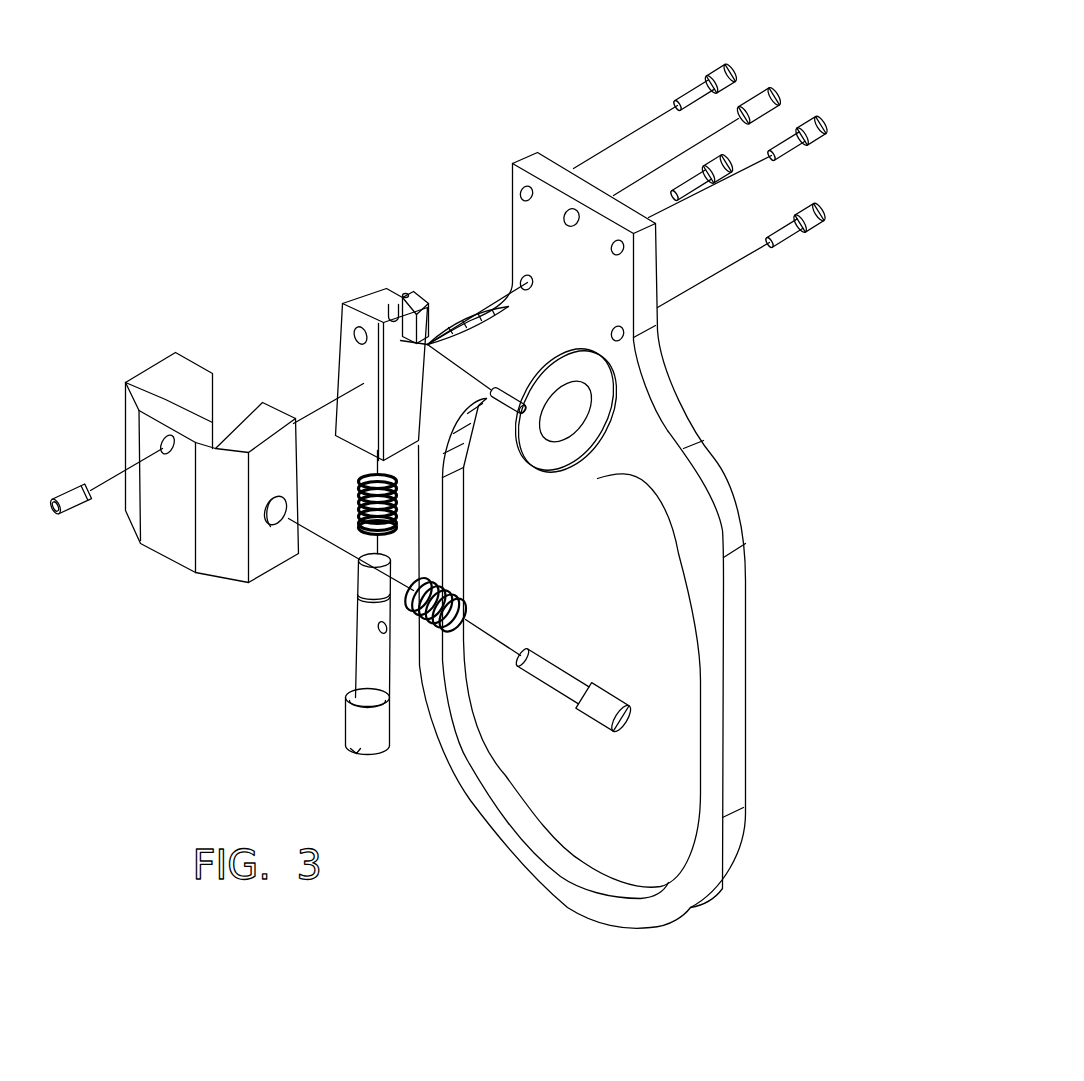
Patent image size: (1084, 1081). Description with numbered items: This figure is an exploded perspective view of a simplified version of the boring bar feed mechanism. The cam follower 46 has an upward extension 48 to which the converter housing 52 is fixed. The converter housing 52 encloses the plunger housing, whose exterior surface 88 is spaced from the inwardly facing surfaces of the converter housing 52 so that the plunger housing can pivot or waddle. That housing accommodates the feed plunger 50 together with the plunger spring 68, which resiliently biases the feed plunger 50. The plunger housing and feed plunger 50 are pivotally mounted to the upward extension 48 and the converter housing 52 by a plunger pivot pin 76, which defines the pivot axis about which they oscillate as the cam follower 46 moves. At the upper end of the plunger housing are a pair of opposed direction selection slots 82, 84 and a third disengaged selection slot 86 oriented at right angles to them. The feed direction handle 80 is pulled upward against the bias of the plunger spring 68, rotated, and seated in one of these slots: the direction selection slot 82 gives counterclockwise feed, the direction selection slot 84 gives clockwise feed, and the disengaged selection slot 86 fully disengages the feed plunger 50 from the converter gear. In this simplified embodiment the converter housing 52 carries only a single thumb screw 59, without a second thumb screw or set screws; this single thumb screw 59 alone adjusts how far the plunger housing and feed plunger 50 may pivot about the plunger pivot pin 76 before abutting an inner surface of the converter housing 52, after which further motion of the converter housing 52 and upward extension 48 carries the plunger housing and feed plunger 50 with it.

The cam follower 46 is at (727, 470).
The upward extension 48 is at (548, 170).
The feed plunger 50 is at (363, 665).
The converter housing 52 is at (152, 364).
The thumb screw 59 is at (613, 680).
The plunger spring 68 is at (400, 503).
The plunger pivot pin 76 is at (73, 502).
The feed direction handle 80 is at (500, 412).
The direction selection slot 82 is at (427, 342).
The direction selection slot 84 is at (400, 297).
The disengaged selection slot 86 is at (404, 295).
The exterior surface 88 is at (348, 375).